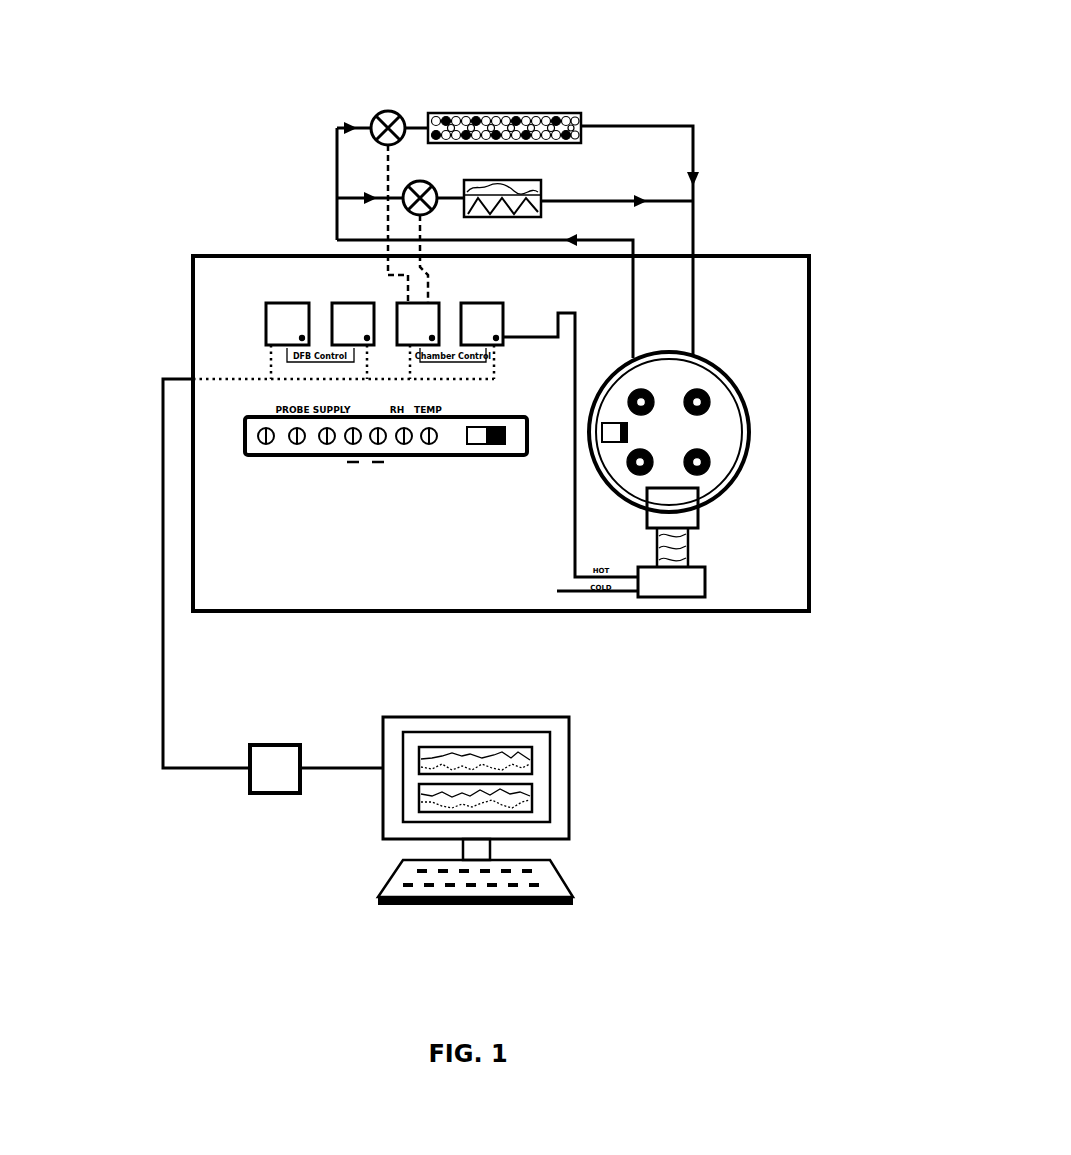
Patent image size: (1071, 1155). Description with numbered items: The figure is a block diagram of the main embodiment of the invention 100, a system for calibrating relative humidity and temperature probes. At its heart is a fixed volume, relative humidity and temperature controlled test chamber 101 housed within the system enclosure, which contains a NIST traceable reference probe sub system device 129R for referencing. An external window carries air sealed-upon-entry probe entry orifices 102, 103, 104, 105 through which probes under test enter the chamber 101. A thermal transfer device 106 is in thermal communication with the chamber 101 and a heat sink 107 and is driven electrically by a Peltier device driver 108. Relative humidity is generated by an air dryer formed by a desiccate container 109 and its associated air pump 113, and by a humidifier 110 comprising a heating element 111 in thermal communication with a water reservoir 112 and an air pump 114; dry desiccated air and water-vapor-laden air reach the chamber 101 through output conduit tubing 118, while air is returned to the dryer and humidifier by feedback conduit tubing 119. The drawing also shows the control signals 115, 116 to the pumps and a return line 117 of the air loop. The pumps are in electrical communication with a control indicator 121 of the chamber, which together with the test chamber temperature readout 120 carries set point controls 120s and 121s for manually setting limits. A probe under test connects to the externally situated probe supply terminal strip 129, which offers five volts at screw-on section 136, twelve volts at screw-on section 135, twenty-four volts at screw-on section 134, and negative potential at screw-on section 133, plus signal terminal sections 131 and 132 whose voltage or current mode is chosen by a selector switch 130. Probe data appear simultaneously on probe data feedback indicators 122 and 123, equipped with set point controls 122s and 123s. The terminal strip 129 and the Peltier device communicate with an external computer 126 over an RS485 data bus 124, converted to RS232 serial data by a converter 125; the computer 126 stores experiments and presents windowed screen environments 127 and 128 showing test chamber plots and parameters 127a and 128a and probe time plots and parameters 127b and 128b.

The embodiment of the present invention 100 is at (501, 305).
The test chamber 101 is at (703, 352).
The probe entry orifice 102 is at (652, 396).
The probe entry orifice 103 is at (709, 400).
The probe entry orifice 104 is at (651, 460).
The probe entry orifice 105 is at (709, 462).
The thermal transfer device 106 is at (687, 519).
The heat sink 107 is at (688, 555).
The device driver 108 is at (677, 597).
The desiccate container 109 is at (533, 110).
The humidifier 110 is at (555, 205).
The heating element 111 is at (543, 200).
The water reservoir 112 is at (497, 182).
The air pump 113 is at (376, 116).
The air pump 114 is at (407, 184).
The wet valve control signal 115 is at (427, 272).
The dry valve control signal 116 is at (388, 225).
The return gas line 117 is at (352, 238).
The output conduit tubing 118 is at (660, 203).
The feedback conduit tubing 119 is at (336, 125).
The test chamber temperature readout 120 is at (503, 308).
The set point control 120s is at (503, 327).
The control indicator 121 is at (439, 305).
The set point control 121s is at (405, 333).
The probe data feedback indicator 122 is at (335, 303).
The set point control 122s is at (340, 333).
The probe data feedback indicator 123 is at (272, 302).
The set point control 123s is at (275, 333).
The RS485 data connection bus 124 is at (163, 768).
The converter 125 is at (279, 747).
The external computer 126 is at (567, 778).
The windowed screen environment 127 is at (493, 747).
The test chamber plots and parameters 127a is at (517, 758).
The probe time plots and parameters 127b is at (527, 763).
The windowed screen environment 128 is at (443, 785).
The test chamber plots and parameters 128a is at (527, 795).
The probe time plots and parameters 128b is at (530, 812).
The probe supply terminal strip 129 is at (452, 455).
The reference probe sub system device 129R is at (615, 435).
The selector switch 130 is at (492, 455).
The screw-on terminal section 131 is at (430, 455).
The screw-on terminal section 132 is at (400, 455).
The screw-on section 133 is at (375, 455).
The screw-on section 134 is at (320, 455).
The screw-on section 135 is at (290, 455).
The screw-on section 136 is at (262, 455).